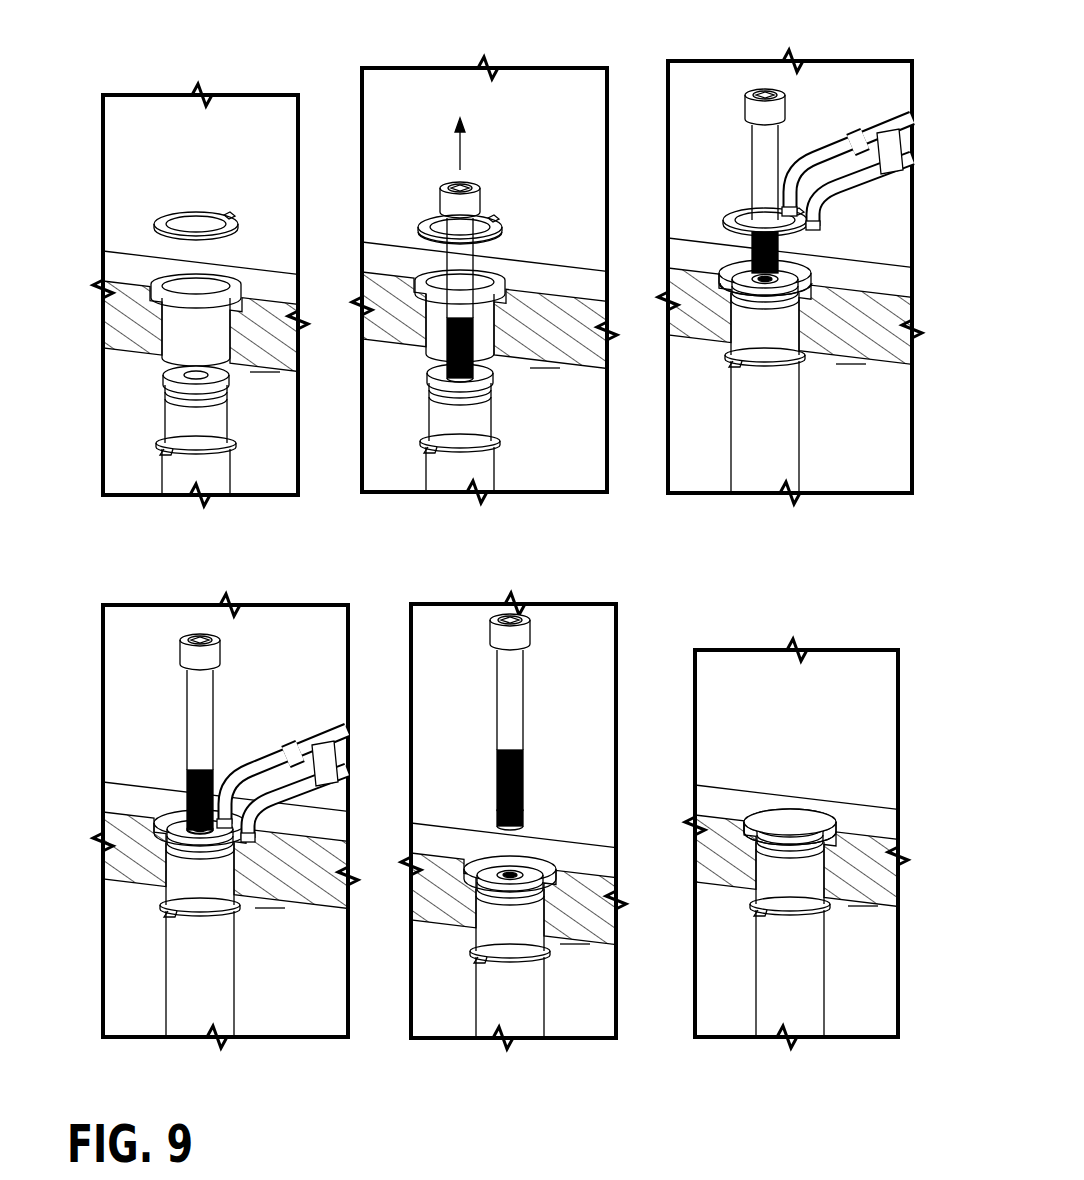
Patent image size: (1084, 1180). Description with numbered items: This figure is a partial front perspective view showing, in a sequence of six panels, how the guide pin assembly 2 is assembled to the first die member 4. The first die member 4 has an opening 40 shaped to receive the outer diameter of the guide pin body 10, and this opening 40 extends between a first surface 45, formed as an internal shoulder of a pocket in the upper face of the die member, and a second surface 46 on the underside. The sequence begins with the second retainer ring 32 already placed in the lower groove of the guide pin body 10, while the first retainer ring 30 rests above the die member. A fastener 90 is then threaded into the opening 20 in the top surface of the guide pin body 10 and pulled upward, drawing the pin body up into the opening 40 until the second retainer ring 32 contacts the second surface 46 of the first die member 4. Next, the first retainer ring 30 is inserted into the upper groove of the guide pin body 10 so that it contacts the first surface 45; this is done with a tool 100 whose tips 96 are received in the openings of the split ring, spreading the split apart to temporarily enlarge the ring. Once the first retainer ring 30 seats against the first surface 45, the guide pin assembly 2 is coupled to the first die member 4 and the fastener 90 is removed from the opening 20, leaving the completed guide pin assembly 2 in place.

The guide pin assembly 2 is at (812, 805).
The first die member 4 is at (130, 278).
The guide pin body 10 is at (190, 493).
The opening 20 is at (175, 372).
The first retainer ring 30 is at (175, 213).
The second retainer ring 32 is at (176, 443).
The opening 40 is at (186, 322).
The first surface 45 is at (432, 232).
The second surface 46 is at (256, 365).
The fastener 90 is at (465, 192).
The tips 96 is at (812, 210).
The tool 100 is at (845, 150).